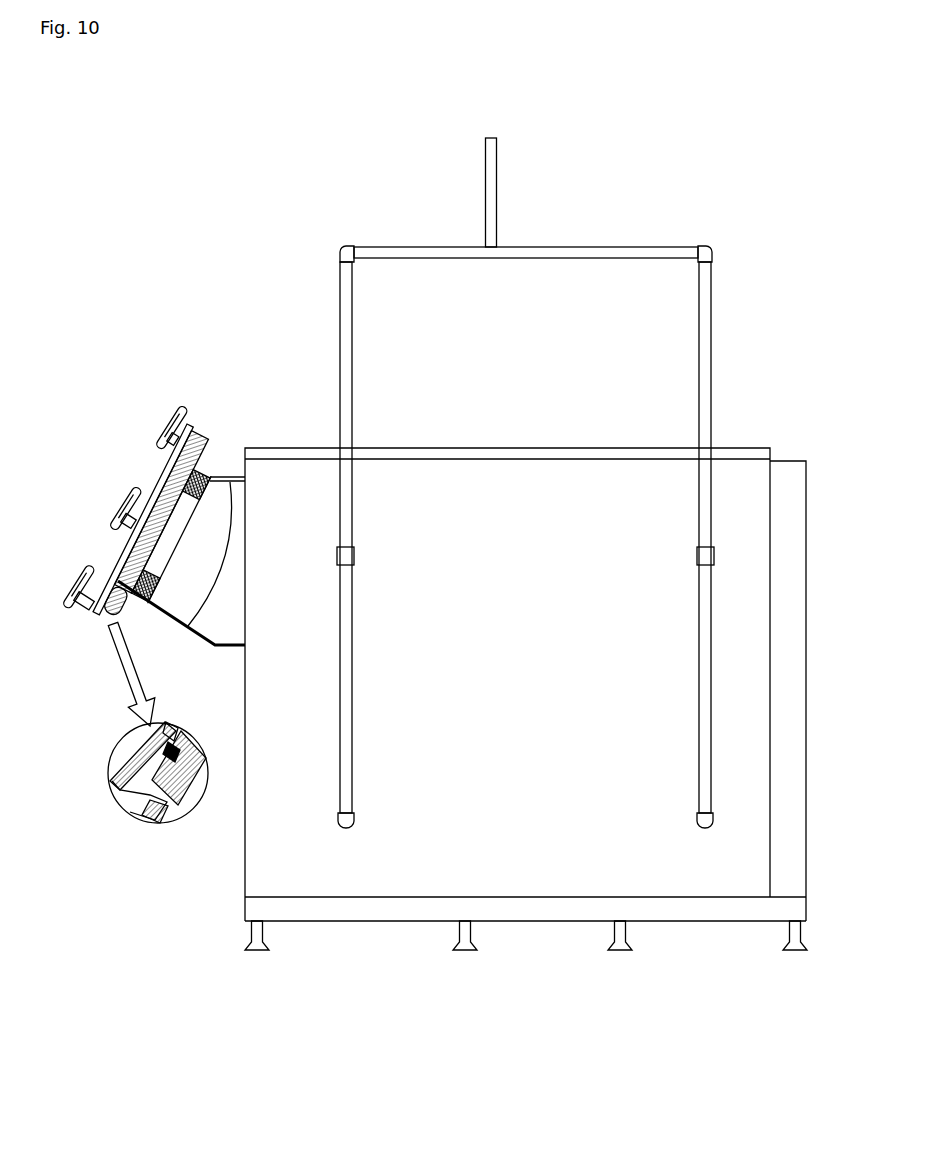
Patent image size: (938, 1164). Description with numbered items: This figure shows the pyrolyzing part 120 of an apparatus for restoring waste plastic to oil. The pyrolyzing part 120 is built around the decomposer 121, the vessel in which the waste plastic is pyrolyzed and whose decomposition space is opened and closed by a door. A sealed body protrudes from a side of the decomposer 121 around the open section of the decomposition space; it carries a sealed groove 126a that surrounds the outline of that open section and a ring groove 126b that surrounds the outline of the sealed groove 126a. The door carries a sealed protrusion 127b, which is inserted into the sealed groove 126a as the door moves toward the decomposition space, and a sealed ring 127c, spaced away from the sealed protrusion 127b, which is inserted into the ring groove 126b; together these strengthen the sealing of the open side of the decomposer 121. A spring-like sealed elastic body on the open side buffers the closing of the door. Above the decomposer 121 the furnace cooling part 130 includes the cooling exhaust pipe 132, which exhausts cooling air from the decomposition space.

The pyrolyzing part 120 is at (754, 428).
The decomposer 121 is at (705, 913).
The sealed groove 126a is at (147, 820).
The ring groove 126b is at (180, 742).
The sealed protrusion 127b is at (142, 798).
The sealed ring 127c is at (163, 750).
The furnace cooling part 130 is at (710, 232).
The cooling exhaust pipe 132 is at (577, 252).